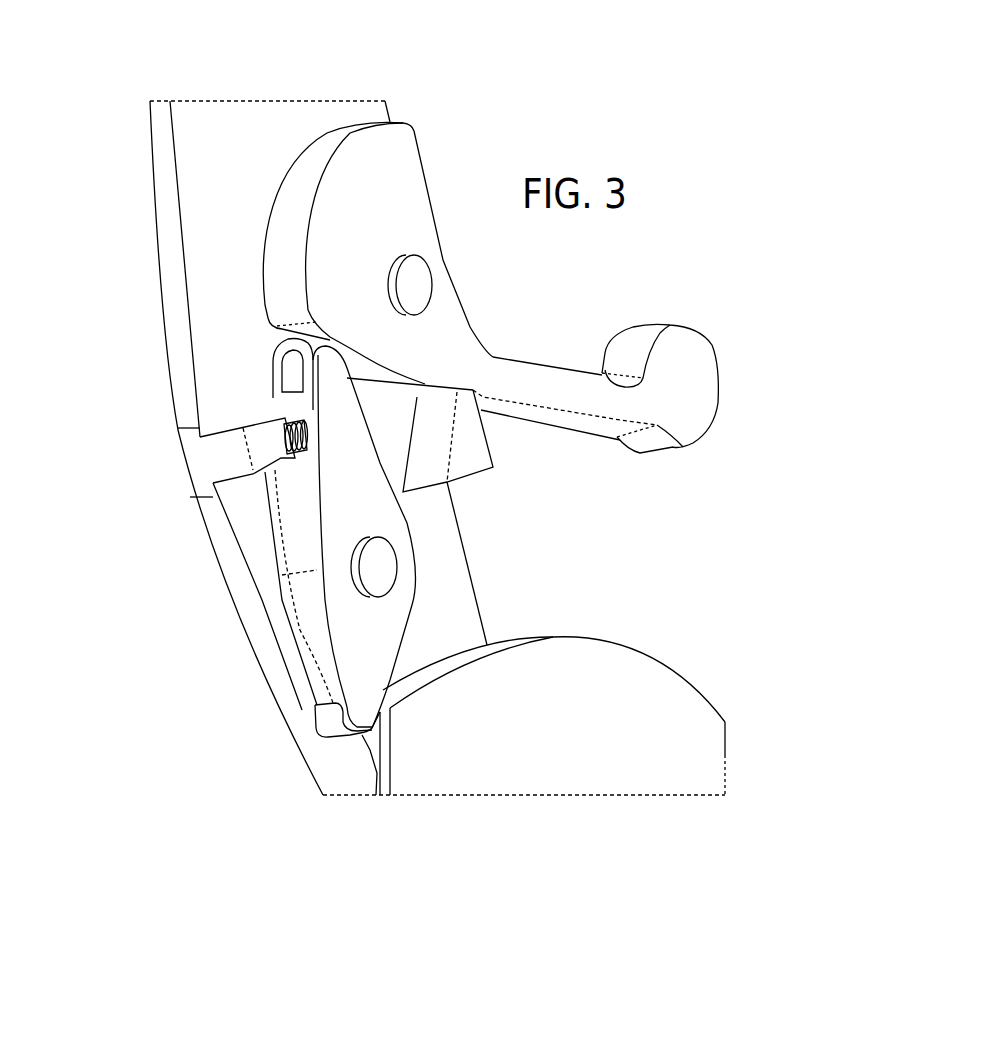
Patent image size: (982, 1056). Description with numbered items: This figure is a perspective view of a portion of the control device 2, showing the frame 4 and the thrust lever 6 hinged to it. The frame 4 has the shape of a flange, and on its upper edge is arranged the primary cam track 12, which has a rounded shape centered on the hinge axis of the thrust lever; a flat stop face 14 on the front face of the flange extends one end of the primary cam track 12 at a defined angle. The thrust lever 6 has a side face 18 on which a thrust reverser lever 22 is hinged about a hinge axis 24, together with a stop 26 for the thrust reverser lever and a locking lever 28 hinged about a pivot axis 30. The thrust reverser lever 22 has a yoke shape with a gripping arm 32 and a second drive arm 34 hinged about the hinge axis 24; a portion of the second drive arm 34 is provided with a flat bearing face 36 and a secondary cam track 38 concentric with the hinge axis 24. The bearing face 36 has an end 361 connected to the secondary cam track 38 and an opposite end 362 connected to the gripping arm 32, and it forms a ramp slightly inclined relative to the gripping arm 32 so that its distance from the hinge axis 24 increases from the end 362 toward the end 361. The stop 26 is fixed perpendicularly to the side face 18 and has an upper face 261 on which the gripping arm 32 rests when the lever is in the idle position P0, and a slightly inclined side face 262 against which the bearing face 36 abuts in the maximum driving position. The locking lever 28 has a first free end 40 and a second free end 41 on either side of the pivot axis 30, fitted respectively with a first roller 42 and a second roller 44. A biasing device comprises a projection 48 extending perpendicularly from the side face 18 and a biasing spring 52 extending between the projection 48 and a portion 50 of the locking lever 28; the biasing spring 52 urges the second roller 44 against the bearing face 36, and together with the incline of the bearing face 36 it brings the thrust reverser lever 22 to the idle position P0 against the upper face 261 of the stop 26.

The control device 2 is at (330, 830).
The frame 4 is at (715, 755).
The thrust lever 6 is at (157, 220).
The primary cam track 12 is at (670, 670).
The stop face 14 is at (378, 727).
The side face 18 is at (236, 104).
The thrust reverser lever 22 is at (558, 287).
The hinge axis 24 is at (423, 283).
The stop 26 is at (483, 445).
The upper face 261 is at (473, 390).
The side face 262 is at (427, 432).
The locking lever 28 is at (297, 543).
The pivot axis 30 is at (387, 560).
The gripping arm 32 is at (720, 358).
The second drive arm 34 is at (263, 187).
The bearing face 36 is at (360, 356).
The end 361 is at (287, 322).
The end 362 is at (375, 381).
The secondary cam track 38 is at (330, 140).
The first free end 40 is at (325, 688).
The second free end 41 is at (293, 408).
The first roller 42 is at (330, 728).
The second roller 44 is at (283, 346).
The projection 48 is at (247, 428).
The portion 50 is at (283, 497).
The biasing spring 52 is at (308, 443).
The idle position P0 is at (682, 303).